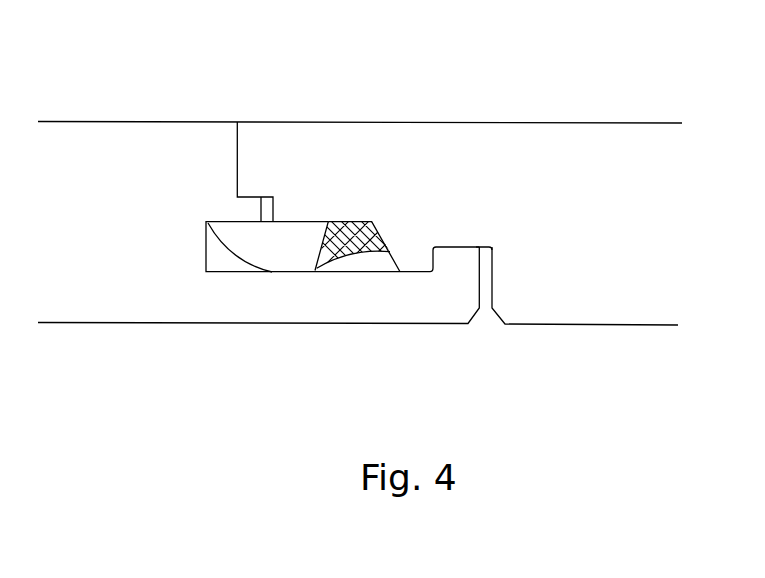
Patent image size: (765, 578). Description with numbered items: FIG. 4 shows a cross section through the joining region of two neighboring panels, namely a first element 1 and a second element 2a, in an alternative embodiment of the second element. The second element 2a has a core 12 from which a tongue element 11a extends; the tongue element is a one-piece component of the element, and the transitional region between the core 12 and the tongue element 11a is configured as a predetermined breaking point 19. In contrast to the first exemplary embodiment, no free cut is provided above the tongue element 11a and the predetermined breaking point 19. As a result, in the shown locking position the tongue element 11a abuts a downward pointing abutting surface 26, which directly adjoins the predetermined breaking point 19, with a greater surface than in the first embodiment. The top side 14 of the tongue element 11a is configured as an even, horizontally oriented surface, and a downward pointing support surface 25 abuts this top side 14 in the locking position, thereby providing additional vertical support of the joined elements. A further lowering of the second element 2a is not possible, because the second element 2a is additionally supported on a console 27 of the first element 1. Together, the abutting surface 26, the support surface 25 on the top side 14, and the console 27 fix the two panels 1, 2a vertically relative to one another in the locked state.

The first element 1 is at (127, 121).
The second element 2a is at (552, 122).
The core 12 is at (636, 219).
The console 27 is at (247, 192).
The tongue element 11a is at (262, 243).
The top side 14 is at (318, 218).
The predetermined breaking point 19 is at (343, 216).
The support surface 25 is at (253, 230).
The abutting surface 26 is at (308, 231).